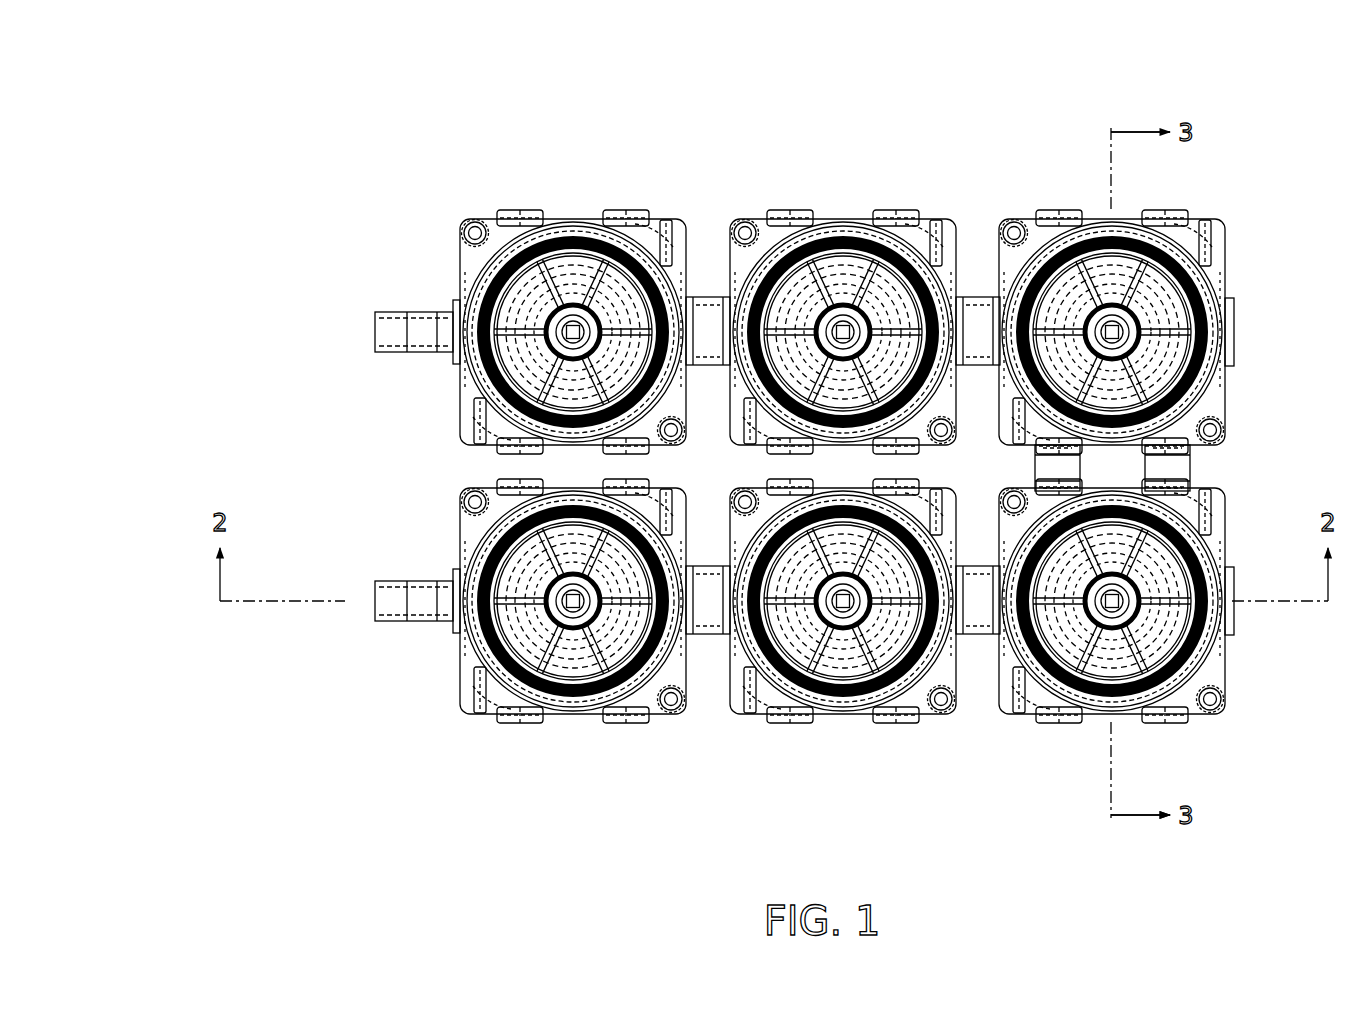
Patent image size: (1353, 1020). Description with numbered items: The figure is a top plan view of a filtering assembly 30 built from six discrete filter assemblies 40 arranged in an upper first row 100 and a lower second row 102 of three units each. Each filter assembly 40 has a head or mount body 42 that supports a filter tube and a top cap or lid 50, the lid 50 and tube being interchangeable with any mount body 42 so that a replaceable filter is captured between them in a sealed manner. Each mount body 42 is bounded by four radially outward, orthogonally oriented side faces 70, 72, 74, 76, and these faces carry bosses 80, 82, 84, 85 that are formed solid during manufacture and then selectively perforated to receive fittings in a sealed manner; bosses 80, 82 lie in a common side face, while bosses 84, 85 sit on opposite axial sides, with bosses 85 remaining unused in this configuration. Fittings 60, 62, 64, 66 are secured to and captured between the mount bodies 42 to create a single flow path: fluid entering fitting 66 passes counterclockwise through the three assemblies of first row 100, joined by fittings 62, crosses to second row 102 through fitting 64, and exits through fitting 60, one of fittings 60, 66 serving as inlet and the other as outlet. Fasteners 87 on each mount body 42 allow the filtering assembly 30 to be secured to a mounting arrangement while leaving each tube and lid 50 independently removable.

The filtering assembly 30 is at (1093, 82).
The filter assembly 40 is at (679, 160).
The mount body 42 is at (468, 262).
The lid 50 is at (838, 250).
The fitting 60 is at (386, 623).
The fitting 62 is at (972, 368).
The fitting 64 is at (1080, 466).
The fitting 66 is at (397, 353).
The side face 70 is at (512, 203).
The side face 72 is at (437, 445).
The side face 74 is at (478, 470).
The side face 76 is at (690, 216).
The boss 80 is at (611, 210).
The boss 82 is at (526, 210).
The boss 84 is at (455, 304).
The boss 85 is at (665, 222).
The fastener 87 is at (750, 225).
The first row 100 is at (300, 656).
The second row 102 is at (283, 335).